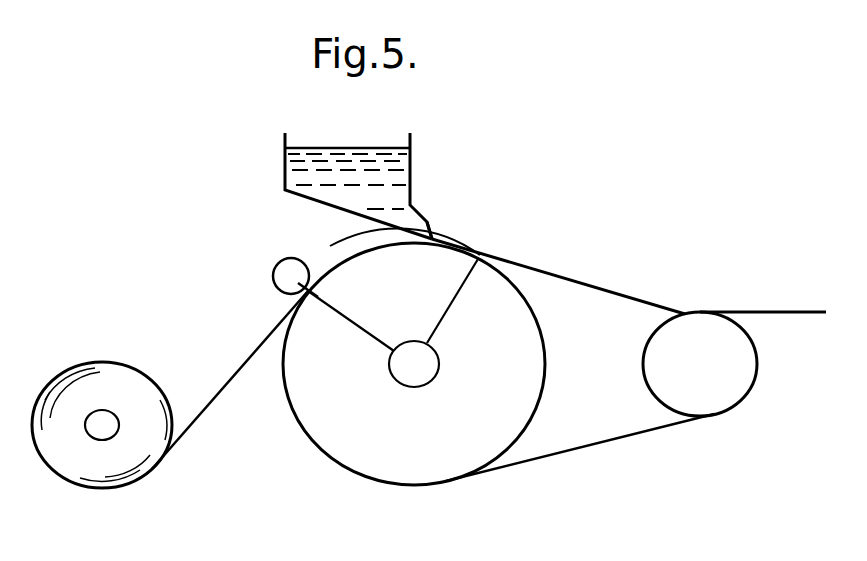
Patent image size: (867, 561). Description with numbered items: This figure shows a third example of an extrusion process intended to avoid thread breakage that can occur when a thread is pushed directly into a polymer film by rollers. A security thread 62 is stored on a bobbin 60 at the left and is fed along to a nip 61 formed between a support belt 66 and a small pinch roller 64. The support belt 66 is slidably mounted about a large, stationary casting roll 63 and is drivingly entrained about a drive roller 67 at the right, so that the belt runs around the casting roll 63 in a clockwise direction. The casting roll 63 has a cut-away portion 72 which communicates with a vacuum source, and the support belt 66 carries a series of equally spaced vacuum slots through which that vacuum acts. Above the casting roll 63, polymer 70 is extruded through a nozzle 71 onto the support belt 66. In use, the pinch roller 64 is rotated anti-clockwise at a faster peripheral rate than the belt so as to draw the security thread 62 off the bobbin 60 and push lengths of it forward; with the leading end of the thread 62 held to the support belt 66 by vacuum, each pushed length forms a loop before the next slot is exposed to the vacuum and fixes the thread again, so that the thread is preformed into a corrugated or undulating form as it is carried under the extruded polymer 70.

The bobbin 60 is at (110, 470).
The nip 61 is at (284, 299).
The security thread 62 is at (238, 380).
The casting roll 63 is at (387, 475).
The pinch roller 64 is at (292, 263).
The support belt 66 is at (617, 440).
The drive roller 67 is at (740, 369).
The polymer 70 is at (352, 168).
The nozzle 71 is at (438, 239).
The cut-away portion 72 is at (413, 284).